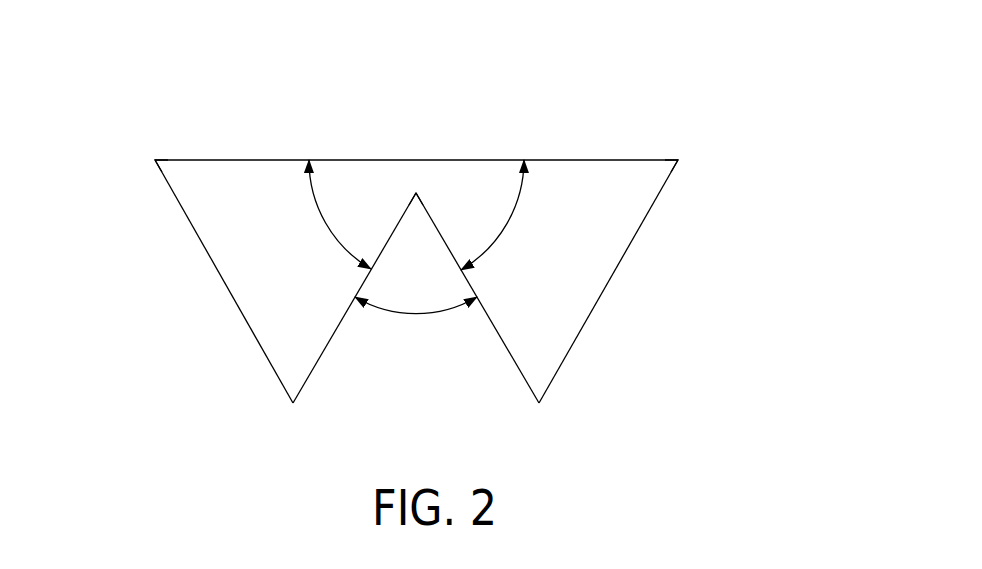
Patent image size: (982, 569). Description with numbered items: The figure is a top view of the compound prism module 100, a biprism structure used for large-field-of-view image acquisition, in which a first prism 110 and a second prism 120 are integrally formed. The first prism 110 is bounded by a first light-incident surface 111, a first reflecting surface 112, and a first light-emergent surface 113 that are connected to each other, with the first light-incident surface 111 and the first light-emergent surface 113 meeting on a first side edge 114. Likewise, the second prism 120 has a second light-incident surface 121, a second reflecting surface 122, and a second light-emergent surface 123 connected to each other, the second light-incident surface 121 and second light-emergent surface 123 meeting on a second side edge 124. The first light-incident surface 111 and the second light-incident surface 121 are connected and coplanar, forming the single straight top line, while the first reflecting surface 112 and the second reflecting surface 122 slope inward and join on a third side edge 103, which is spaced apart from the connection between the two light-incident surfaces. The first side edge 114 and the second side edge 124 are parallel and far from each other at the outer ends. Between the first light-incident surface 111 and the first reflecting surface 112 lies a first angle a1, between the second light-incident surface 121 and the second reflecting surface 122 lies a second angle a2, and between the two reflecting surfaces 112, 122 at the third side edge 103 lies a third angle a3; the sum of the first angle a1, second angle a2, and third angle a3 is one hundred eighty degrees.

The compound prism module 100 is at (676, 96).
The third side edge 103 is at (414, 192).
The first prism 110 is at (222, 190).
The first light-incident surface 111 is at (236, 158).
The first reflecting surface 112 is at (339, 330).
The first light-emergent surface 113 is at (234, 302).
The first side edge 114 is at (155, 160).
The second prism 120 is at (612, 190).
The second light-incident surface 121 is at (559, 158).
The second reflecting surface 122 is at (494, 329).
The second light-emergent surface 123 is at (601, 300).
The second side edge 124 is at (678, 160).
The first angle a1 is at (340, 214).
The second angle a2 is at (492, 215).
The third angle a3 is at (416, 296).